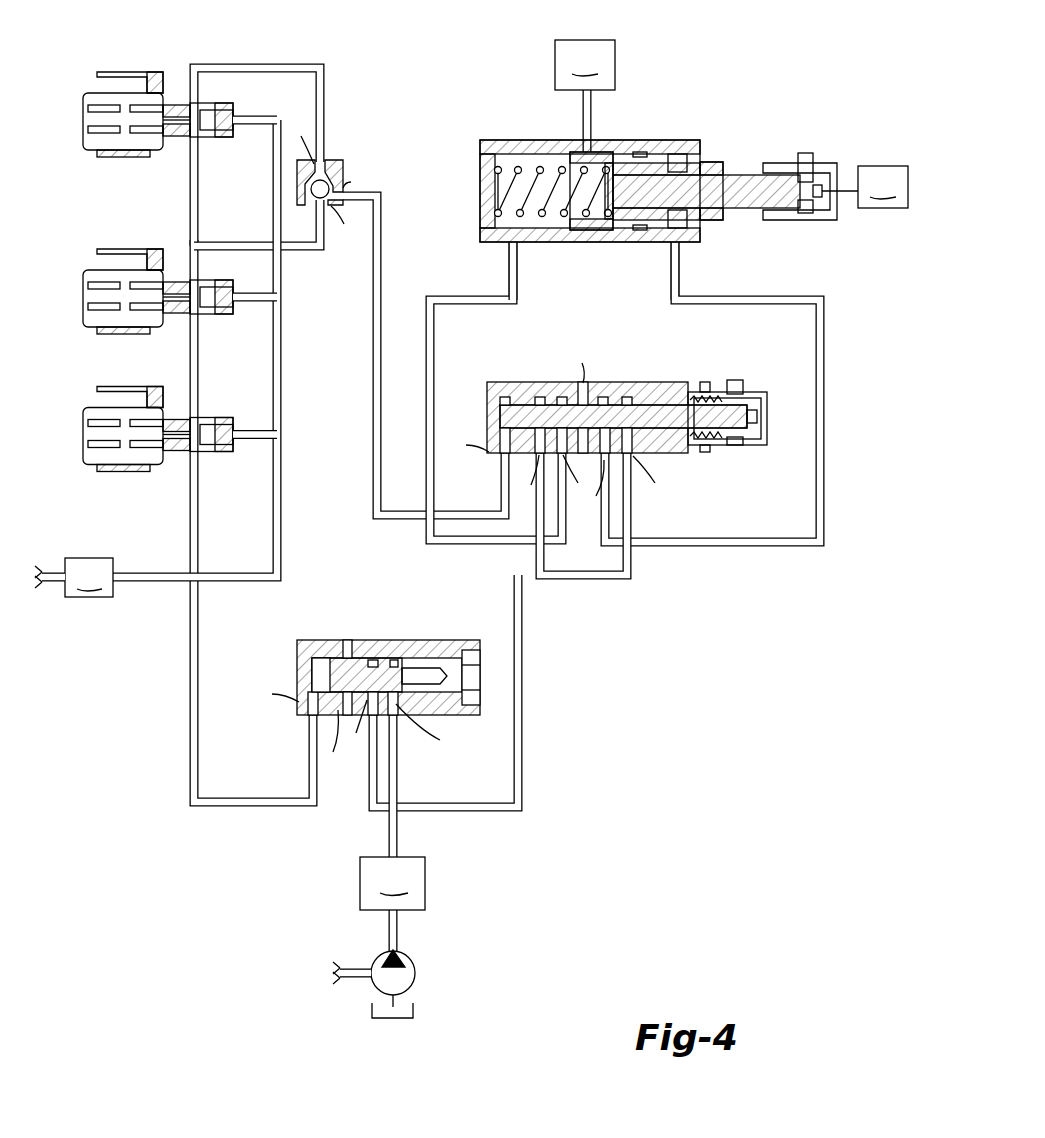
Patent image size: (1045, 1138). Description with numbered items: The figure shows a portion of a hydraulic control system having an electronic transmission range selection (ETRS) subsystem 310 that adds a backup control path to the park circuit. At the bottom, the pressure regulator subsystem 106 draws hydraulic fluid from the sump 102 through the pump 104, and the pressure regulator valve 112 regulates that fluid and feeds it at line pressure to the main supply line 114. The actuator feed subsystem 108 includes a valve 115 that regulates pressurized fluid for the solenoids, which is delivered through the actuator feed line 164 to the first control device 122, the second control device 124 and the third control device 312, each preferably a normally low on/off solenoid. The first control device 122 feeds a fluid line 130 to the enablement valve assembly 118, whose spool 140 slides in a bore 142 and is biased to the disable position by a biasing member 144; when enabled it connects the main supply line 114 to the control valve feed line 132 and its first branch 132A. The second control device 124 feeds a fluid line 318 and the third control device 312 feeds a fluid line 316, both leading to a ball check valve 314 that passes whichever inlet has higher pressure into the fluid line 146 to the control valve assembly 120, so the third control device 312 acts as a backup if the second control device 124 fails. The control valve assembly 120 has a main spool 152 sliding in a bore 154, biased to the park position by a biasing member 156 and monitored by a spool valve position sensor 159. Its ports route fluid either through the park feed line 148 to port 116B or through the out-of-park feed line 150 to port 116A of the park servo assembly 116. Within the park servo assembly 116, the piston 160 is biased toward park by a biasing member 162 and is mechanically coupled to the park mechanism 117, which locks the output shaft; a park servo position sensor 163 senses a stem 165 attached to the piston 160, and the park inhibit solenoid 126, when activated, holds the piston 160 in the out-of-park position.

The ETRS subsystem 310 is at (471, 525).
The third control device 312 is at (123, 92).
The second control device 124 is at (123, 268).
The first control device 122 is at (132, 472).
The fluid line 316 is at (316, 62).
The fluid line 318 is at (226, 241).
The ball check valve 314 is at (350, 138).
The actuator feed line 164 is at (283, 530).
The fluid line 146 is at (381, 523).
The park feed line 148 is at (434, 338).
The out-of-park feed line 150 is at (826, 345).
The first branch of the control valve feed line 132A is at (535, 557).
The control valve feed line 132 is at (527, 727).
The fluid line 130 is at (190, 722).
The main supply line 114 is at (395, 772).
The park servo assembly 116 is at (630, 159).
The port 116A is at (672, 248).
The port 116B is at (518, 248).
The piston 160 is at (606, 150).
The biasing member 162 is at (500, 215).
The stem 165 is at (735, 176).
The park servo position sensor 163 is at (810, 153).
The park inhibit solenoid 126 is at (585, 65).
The park mechanism 117 is at (865, 187).
The control valve assembly 120 is at (630, 419).
The main spool 152 is at (640, 412).
The bore 154 is at (676, 456).
The biasing member 156 is at (712, 434).
The spool valve position sensor 159 is at (743, 388).
The enablement valve assembly 118 is at (349, 680).
The spool 140 is at (396, 660).
The bore 142 is at (322, 656).
The biasing member 144 is at (462, 655).
The pressure regulator valve 112 is at (392, 883).
The pressure regulator subsystem 106 is at (440, 957).
The pump 104 is at (416, 962).
The sump 102 is at (414, 1010).
The valve 115 is at (94, 608).
The actuator feed subsystem 108 is at (74, 609).